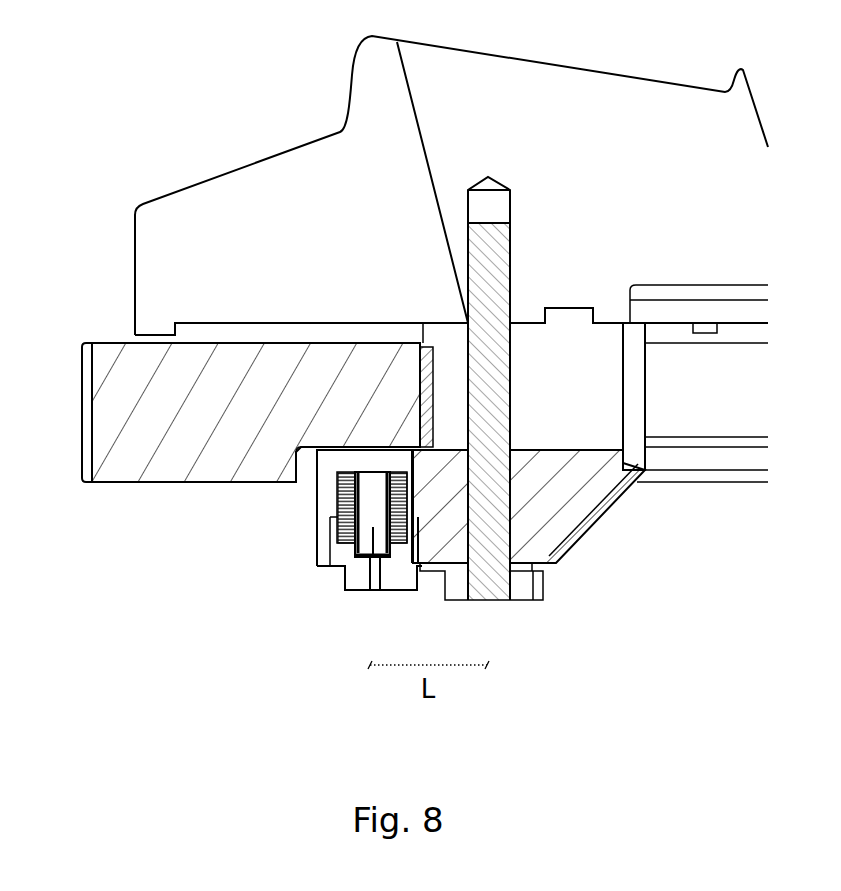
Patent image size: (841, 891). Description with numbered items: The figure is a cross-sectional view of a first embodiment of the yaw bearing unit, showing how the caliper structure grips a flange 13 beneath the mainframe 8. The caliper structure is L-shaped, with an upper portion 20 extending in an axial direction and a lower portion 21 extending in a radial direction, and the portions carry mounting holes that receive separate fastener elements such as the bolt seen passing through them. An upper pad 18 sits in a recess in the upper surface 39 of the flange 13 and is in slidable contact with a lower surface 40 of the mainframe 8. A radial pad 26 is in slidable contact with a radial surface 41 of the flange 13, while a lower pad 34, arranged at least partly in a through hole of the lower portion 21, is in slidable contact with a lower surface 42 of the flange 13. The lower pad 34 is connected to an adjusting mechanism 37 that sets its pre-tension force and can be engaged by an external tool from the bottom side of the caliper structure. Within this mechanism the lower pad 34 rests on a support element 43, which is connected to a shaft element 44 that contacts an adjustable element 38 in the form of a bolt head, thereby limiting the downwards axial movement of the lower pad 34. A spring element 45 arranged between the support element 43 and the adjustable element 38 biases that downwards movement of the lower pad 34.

The mainframe 8 is at (288, 240).
The flange 13 is at (238, 422).
The upper pad 18 is at (215, 323).
The upper portion 20 is at (587, 440).
The lower portion 21 is at (566, 517).
The radial pad 26 is at (425, 370).
The lower pad 34 is at (360, 447).
The adjusting mechanism 37 is at (317, 506).
The adjustable element 38 is at (358, 578).
The upper surface 39 is at (118, 343).
The lower surface 40 is at (270, 323).
The radial surface 41 is at (418, 392).
The lower surface 42 is at (296, 476).
The support element 43 is at (413, 455).
The shaft element 44 is at (402, 562).
The spring element 45 is at (320, 560).